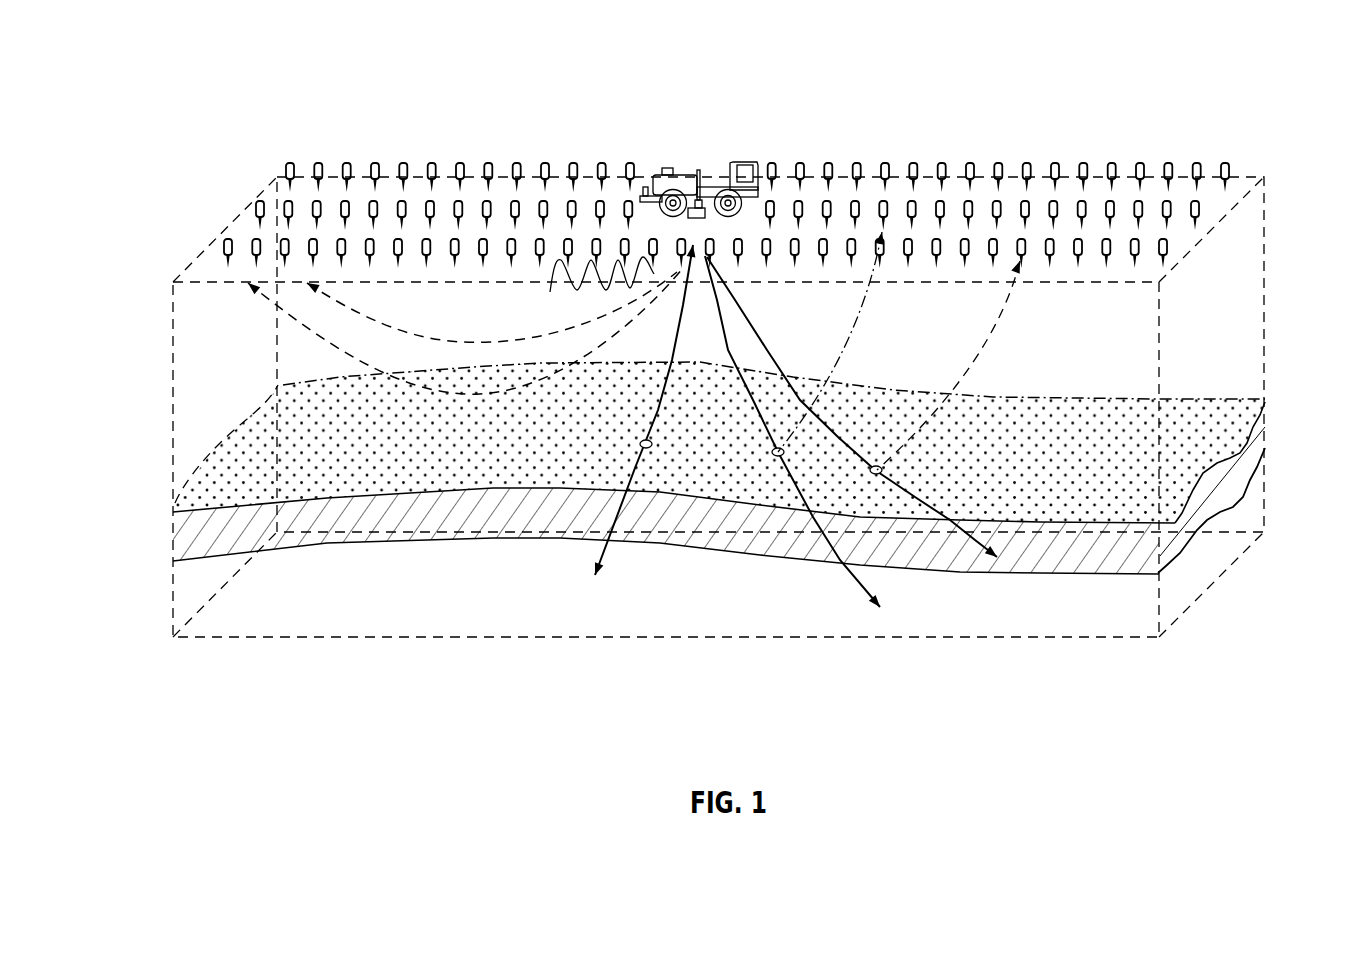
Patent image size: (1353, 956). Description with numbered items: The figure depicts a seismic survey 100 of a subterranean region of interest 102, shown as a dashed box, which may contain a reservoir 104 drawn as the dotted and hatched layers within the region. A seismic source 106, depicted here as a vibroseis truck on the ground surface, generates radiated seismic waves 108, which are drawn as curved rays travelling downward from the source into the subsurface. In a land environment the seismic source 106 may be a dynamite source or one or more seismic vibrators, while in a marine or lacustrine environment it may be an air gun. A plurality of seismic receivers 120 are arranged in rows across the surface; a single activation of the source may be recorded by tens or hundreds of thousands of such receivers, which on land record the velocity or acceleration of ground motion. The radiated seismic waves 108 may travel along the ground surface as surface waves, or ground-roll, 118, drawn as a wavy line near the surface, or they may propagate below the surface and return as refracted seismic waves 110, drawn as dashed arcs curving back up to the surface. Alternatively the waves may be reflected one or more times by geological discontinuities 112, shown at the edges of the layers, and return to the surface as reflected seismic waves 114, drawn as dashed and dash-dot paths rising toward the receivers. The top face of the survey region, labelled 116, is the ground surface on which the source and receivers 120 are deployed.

The seismic survey 100 is at (1267, 87).
The subterranean region of interest 102 is at (1102, 605).
The reservoir 104 is at (265, 405).
The seismic source 106 is at (673, 168).
The radiated seismic waves 108 is at (607, 550).
The refracted seismic waves 110 is at (367, 317).
The geological discontinuities 112 is at (1160, 576).
The reflected seismic waves 114 is at (868, 292).
The survey area surface 116 is at (218, 238).
The surface waves (ground-roll) 118 is at (533, 283).
The seismic receivers 120 is at (1138, 160).